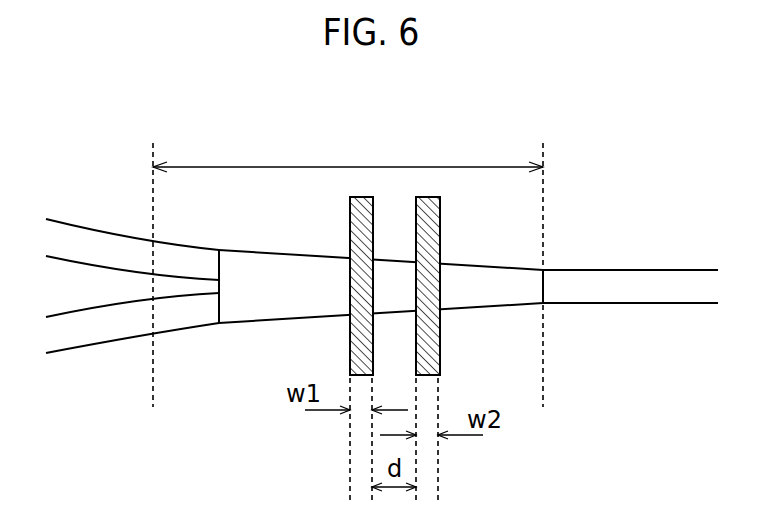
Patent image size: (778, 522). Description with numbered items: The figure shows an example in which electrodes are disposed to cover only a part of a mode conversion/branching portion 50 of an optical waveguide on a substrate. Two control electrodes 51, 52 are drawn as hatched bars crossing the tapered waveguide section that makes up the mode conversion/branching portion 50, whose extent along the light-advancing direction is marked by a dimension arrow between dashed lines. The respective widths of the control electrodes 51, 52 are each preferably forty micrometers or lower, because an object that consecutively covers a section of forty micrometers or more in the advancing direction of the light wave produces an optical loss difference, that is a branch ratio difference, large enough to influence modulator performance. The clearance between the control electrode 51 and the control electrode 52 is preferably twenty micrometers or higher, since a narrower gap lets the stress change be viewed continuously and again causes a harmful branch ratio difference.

The mode conversion/branching portion 50 is at (273, 167).
The control electrode 51 is at (358, 197).
The control electrode 52 is at (426, 197).